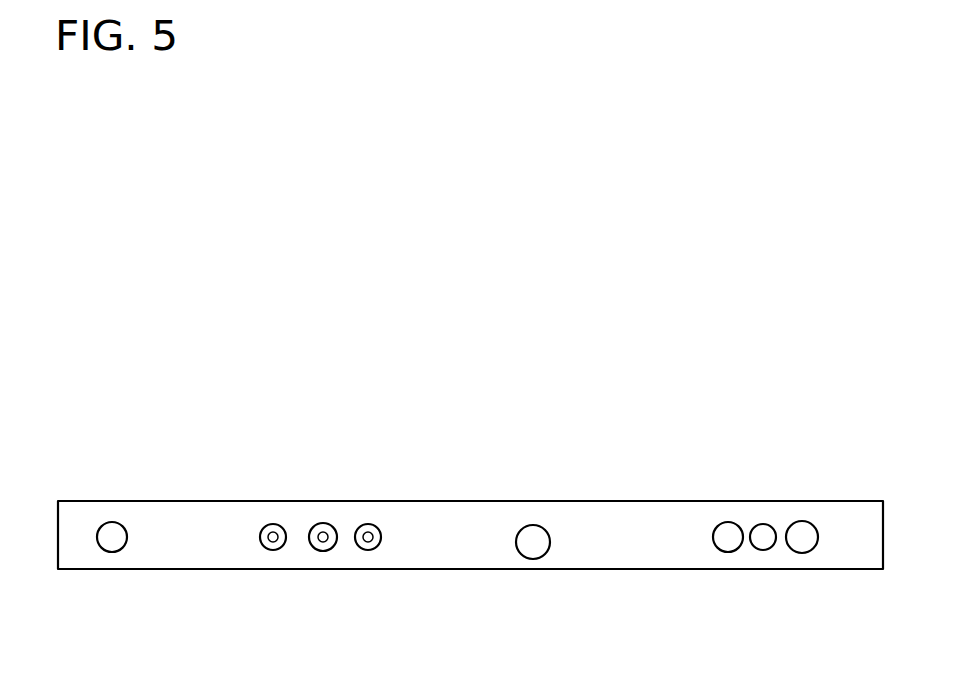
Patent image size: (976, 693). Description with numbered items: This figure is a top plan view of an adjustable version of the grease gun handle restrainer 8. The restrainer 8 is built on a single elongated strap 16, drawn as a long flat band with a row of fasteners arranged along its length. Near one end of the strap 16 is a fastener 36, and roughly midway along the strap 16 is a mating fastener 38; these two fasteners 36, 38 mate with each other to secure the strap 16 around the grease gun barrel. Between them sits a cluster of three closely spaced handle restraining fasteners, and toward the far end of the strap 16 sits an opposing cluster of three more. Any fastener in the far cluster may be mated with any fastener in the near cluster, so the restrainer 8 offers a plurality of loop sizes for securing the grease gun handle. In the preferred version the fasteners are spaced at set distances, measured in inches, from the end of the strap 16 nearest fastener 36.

The restrainer 8 is at (252, 397).
The strap 16 is at (625, 523).
The fastener 36 is at (112, 530).
The fastener 38 is at (533, 542).